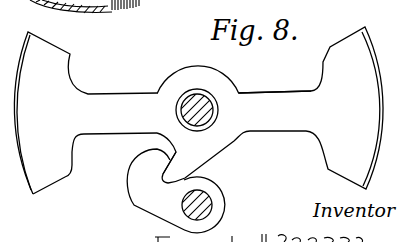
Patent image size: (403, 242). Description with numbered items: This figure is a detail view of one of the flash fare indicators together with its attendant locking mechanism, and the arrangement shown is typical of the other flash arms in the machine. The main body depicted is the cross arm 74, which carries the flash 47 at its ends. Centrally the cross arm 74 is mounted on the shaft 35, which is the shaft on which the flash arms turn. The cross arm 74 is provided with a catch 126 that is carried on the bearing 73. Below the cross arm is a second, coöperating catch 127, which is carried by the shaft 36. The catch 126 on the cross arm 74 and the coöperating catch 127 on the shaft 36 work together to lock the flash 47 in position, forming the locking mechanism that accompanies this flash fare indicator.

The flash 47 is at (62, 62).
The bearing 73 is at (167, 80).
The cross arm 74 is at (268, 92).
The shaft 35 is at (212, 99).
The catch 126 is at (170, 160).
The coöperating catch 127 is at (134, 192).
The shaft 36 is at (208, 194).